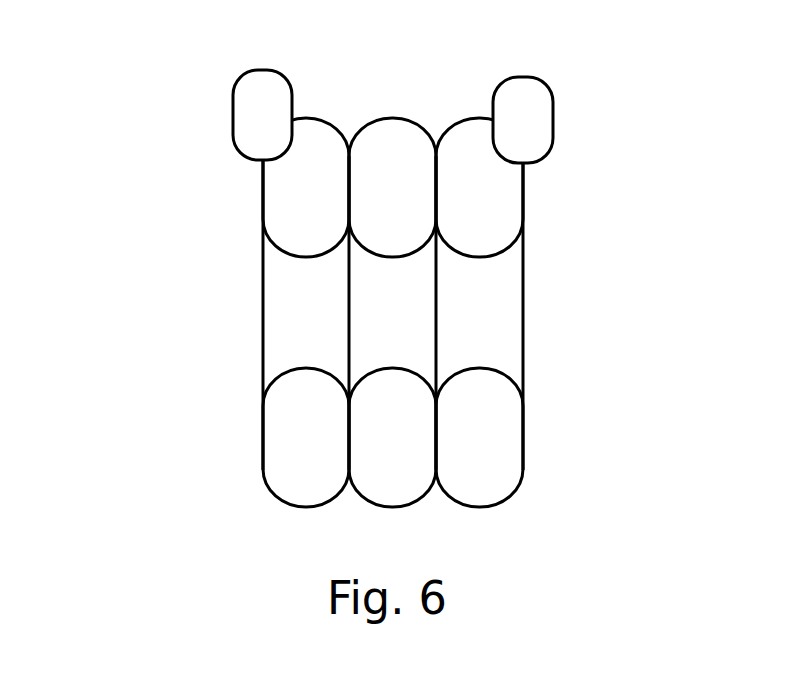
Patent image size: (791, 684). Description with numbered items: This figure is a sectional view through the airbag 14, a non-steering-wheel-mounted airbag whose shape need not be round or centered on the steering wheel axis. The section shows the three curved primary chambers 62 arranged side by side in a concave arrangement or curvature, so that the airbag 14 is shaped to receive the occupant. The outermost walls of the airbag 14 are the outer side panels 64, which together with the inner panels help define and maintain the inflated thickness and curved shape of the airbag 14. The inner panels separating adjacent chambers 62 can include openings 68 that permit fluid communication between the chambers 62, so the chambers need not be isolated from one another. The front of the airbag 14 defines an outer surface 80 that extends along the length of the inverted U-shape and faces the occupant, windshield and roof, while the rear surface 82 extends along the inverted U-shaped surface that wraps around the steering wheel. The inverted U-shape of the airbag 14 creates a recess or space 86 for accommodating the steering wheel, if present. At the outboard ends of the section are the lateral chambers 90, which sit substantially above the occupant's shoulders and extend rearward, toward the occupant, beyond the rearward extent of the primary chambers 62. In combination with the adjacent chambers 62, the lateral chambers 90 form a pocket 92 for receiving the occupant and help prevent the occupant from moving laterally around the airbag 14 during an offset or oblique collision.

The airbag 14 is at (178, 151).
The chambers 62 is at (293, 197).
The outer side panels 64 is at (262, 263).
The openings 68 is at (348, 307).
The outer surface 80 is at (395, 118).
The rear surface 82 is at (300, 258).
The recess or space 86 is at (555, 294).
The lateral chambers 90 is at (263, 103).
The pocket 92 is at (309, 92).